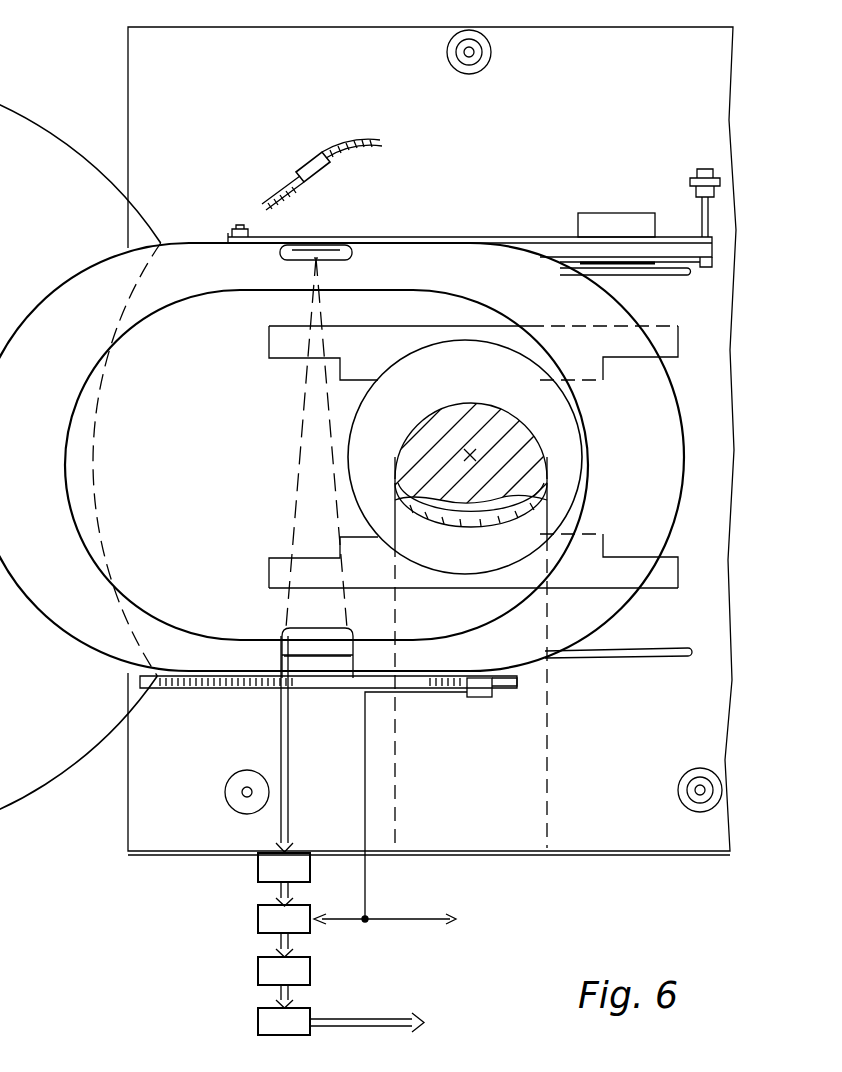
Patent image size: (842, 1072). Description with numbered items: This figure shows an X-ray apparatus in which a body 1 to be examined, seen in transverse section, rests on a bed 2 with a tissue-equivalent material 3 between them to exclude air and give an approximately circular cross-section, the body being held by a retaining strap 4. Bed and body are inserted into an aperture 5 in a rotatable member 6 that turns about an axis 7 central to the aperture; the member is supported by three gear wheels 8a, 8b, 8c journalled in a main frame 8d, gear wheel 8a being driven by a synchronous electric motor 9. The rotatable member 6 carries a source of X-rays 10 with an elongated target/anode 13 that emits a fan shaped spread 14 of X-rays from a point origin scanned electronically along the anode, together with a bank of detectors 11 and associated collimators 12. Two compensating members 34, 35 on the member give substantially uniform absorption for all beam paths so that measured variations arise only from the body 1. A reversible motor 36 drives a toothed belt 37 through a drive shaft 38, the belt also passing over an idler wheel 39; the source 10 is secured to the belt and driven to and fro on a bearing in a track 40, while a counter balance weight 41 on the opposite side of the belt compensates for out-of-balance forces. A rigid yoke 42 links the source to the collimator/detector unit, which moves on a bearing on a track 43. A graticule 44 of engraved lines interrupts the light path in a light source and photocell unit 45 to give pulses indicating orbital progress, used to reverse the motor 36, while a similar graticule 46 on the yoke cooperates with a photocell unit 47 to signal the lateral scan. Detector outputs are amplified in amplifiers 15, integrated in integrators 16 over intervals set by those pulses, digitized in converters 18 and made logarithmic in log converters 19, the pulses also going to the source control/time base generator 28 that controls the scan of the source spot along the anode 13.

The body 1 is at (490, 460).
The bed 2 is at (470, 521).
The material 3 is at (463, 518).
The retaining strap 4 is at (545, 458).
The aperture 5 is at (372, 440).
The rotatable member 6 is at (605, 800).
The axis 7 is at (470, 455).
The gear wheel 8a is at (493, 52).
The gear wheel 8b is at (225, 798).
The gear wheel 8c is at (680, 806).
The main frame 8d is at (707, 848).
The synchronous electric motor 9 is at (447, 52).
The source of X-rays 10 is at (350, 256).
The bank of detectors 11 is at (326, 668).
The collimators 12 is at (306, 624).
The elongated target/anode 13 is at (285, 257).
The fan shaped spread of X-rays 14 is at (292, 488).
The amplifier 15 is at (232, 878).
The integrators 16 is at (238, 920).
The A/D converter 18 is at (338, 983).
The log converter 19 is at (238, 1024).
The source control/time base generator 28 is at (443, 823).
The compensating member 34 is at (268, 343).
The compensating member 35 is at (268, 574).
The reversible motor 36 is at (700, 175).
The toothed belt 37 is at (456, 235).
The drive shaft 38 is at (700, 230).
The idler wheel 39 is at (250, 232).
The track 40 is at (688, 276).
The counter balance weight 41 is at (606, 213).
The yoke 42 is at (113, 678).
The track 43 is at (656, 660).
The graticule 44 is at (380, 144).
The light source and photocell unit 45 is at (304, 172).
The graticule 46 is at (178, 692).
The light source and photocell unit 47 is at (484, 700).